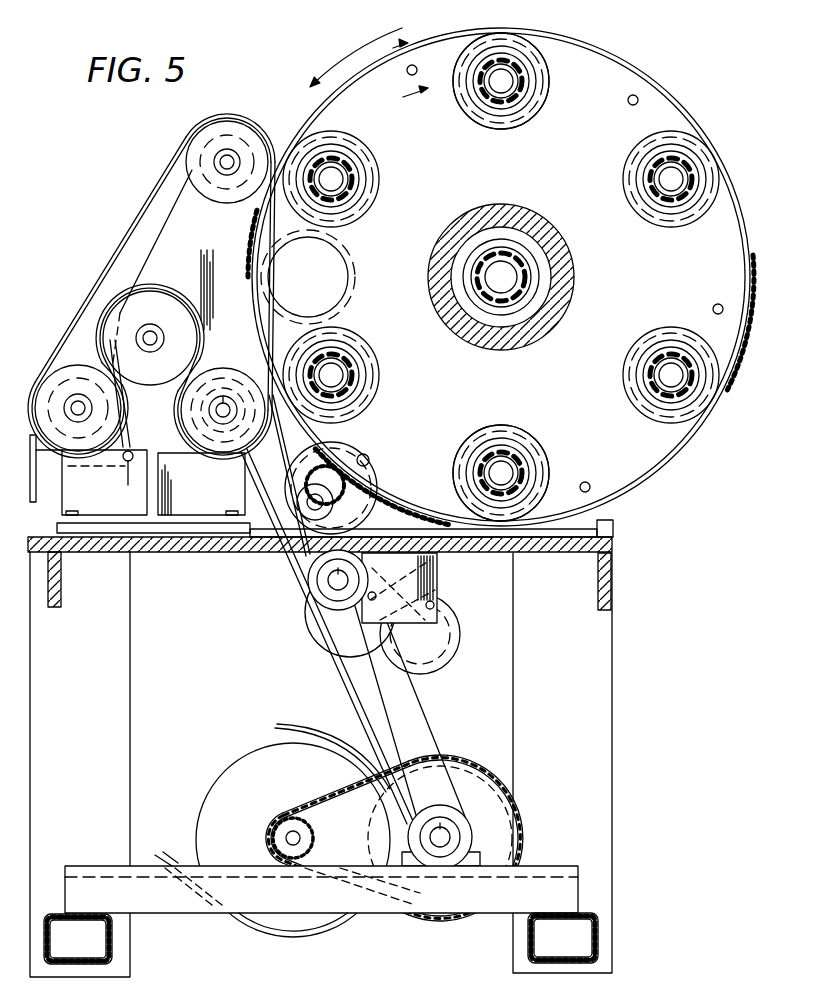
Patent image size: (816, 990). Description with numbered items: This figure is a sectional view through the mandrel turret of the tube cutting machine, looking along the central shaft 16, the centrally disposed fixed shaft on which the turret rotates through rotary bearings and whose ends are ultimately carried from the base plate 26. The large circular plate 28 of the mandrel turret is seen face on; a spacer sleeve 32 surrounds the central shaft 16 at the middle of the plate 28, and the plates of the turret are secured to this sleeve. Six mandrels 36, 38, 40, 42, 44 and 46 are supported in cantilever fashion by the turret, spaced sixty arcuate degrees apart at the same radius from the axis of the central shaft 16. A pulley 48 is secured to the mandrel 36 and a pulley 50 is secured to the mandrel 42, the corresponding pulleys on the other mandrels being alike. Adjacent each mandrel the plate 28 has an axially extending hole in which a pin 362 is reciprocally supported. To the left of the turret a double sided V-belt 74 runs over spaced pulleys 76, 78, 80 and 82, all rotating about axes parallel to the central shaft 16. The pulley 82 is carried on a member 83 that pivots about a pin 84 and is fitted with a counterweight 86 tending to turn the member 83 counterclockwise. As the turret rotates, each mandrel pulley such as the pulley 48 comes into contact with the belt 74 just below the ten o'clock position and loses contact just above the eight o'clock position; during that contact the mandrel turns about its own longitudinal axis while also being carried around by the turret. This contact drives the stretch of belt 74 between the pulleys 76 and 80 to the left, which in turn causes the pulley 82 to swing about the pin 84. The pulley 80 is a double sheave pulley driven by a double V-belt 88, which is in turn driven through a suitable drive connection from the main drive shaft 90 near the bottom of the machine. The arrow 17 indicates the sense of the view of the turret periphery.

The central shaft 16 is at (530, 268).
The direction of rotation / section line 17 is at (369, 70).
The base plate 26 is at (197, 548).
The circular plate 28 is at (640, 82).
The spacer sleeve 32 is at (541, 220).
The mandrel 36 is at (518, 79).
The mandrel 38 is at (676, 205).
The mandrel 40 is at (668, 356).
The mandrel 42 is at (502, 455).
The mandrel 44 is at (345, 373).
The mandrel 46 is at (352, 172).
The pulley 48 is at (528, 113).
The pulley 50 is at (537, 458).
The double sided V-belt 74 is at (136, 232).
The pulley 76 is at (218, 185).
The pulley 78 is at (167, 318).
The pulley 80 is at (204, 424).
The pulley 82 is at (112, 415).
The member 83 is at (122, 438).
The pin 84 is at (124, 478).
The counterweight 86 is at (36, 481).
The double V-belt 88 is at (290, 563).
The main drive shaft 90 is at (448, 836).
The pin 362 is at (412, 64).